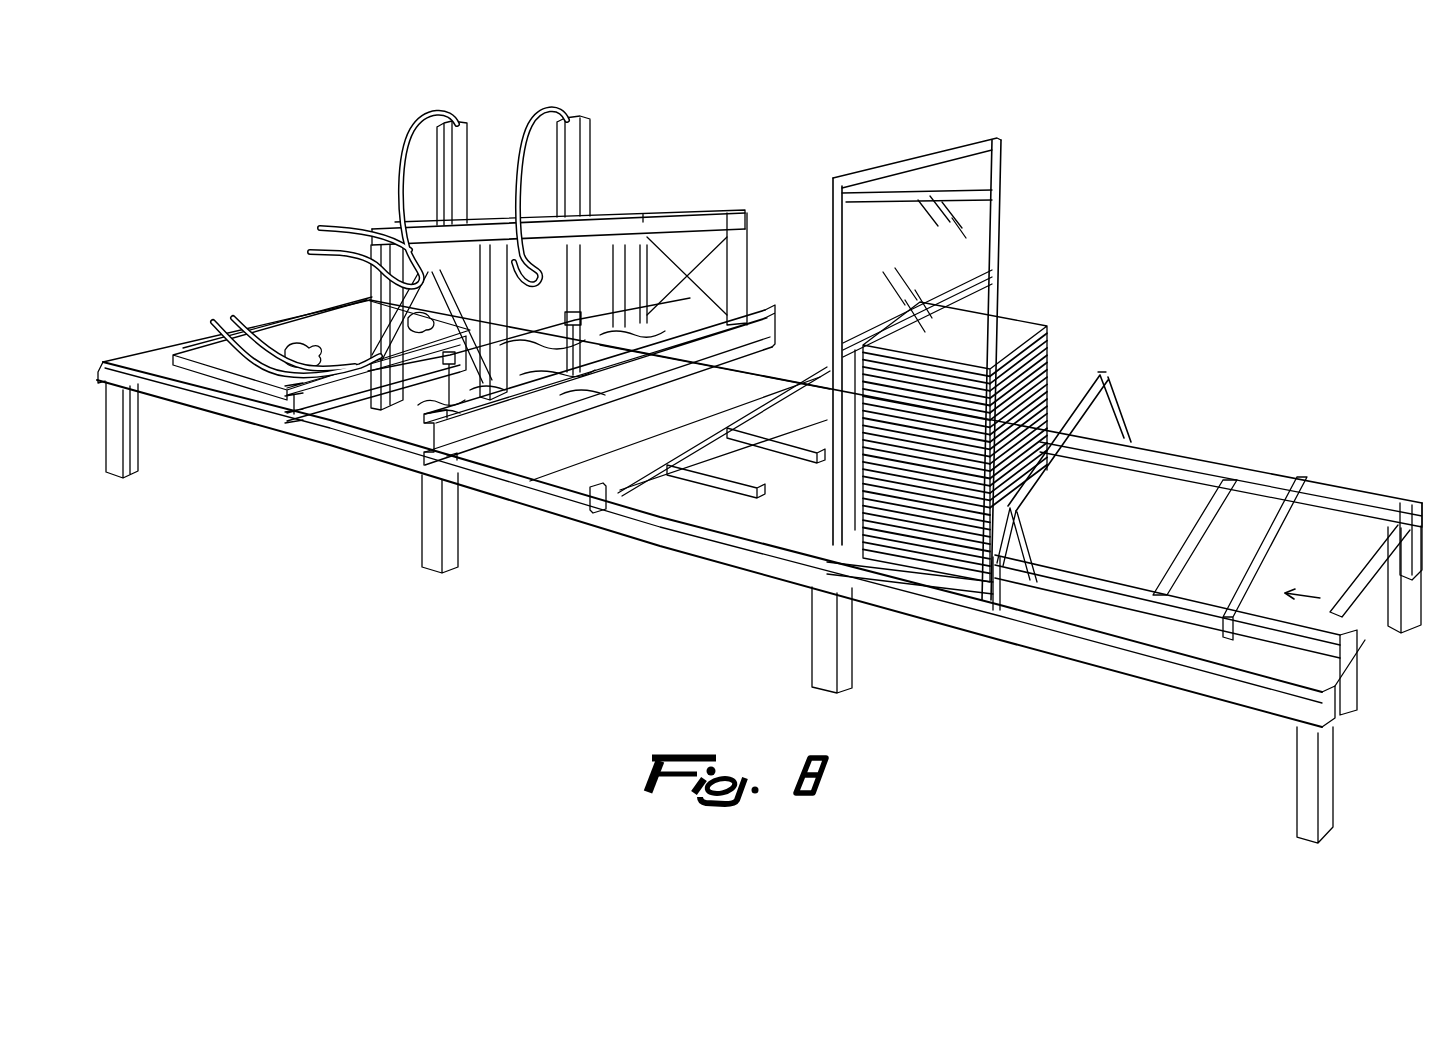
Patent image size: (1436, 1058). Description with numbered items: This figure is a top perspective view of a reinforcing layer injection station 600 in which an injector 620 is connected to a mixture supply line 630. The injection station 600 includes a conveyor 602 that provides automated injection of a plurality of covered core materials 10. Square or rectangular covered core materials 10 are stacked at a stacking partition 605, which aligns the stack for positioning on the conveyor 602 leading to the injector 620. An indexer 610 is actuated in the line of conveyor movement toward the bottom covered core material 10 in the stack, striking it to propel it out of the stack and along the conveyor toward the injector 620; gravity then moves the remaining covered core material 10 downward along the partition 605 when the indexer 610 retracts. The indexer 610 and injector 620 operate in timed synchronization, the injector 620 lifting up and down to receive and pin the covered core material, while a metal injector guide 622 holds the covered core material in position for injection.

The reinforcing layer injection station 600 is at (1150, 193).
The conveyor 602 is at (1380, 550).
The stacking partition 605 is at (903, 160).
The indexer 610 is at (1158, 487).
The injector 620 is at (459, 201).
The metal injector guide 622 is at (763, 312).
The mixture supply line 630 is at (445, 115).
The covered core material 10 is at (1045, 320).